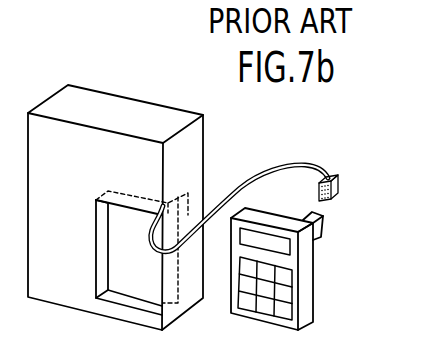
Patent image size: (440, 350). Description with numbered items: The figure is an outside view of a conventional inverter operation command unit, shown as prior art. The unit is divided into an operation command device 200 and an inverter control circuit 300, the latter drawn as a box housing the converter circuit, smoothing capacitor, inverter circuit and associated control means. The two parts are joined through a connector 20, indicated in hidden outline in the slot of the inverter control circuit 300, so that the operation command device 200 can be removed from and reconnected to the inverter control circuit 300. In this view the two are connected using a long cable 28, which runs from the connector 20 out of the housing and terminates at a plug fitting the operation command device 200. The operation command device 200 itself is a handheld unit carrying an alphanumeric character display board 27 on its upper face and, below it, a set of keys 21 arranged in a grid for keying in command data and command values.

The inverter control circuit 300 is at (172, 103).
The connector 20 is at (188, 193).
The long cable 28 is at (257, 170).
The alphanumeric character display board 27 is at (260, 230).
The operation command device 200 is at (299, 265).
The keys 21 is at (248, 310).